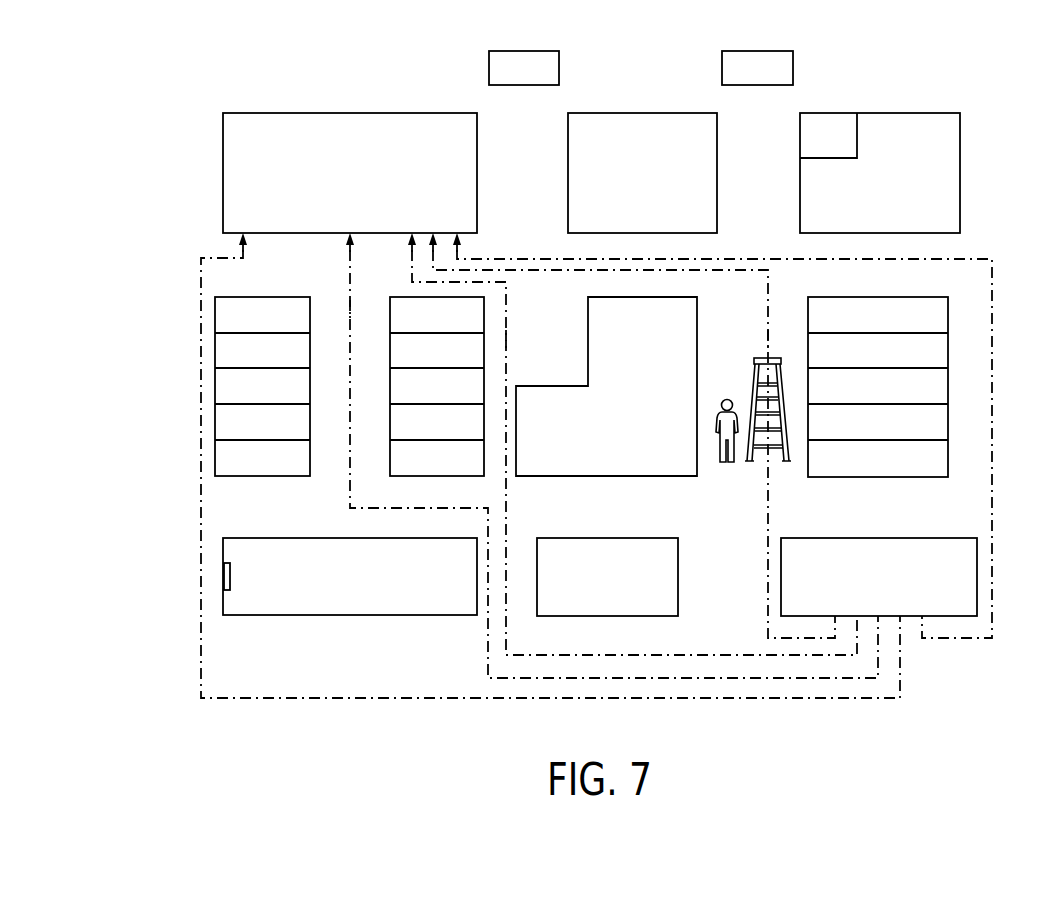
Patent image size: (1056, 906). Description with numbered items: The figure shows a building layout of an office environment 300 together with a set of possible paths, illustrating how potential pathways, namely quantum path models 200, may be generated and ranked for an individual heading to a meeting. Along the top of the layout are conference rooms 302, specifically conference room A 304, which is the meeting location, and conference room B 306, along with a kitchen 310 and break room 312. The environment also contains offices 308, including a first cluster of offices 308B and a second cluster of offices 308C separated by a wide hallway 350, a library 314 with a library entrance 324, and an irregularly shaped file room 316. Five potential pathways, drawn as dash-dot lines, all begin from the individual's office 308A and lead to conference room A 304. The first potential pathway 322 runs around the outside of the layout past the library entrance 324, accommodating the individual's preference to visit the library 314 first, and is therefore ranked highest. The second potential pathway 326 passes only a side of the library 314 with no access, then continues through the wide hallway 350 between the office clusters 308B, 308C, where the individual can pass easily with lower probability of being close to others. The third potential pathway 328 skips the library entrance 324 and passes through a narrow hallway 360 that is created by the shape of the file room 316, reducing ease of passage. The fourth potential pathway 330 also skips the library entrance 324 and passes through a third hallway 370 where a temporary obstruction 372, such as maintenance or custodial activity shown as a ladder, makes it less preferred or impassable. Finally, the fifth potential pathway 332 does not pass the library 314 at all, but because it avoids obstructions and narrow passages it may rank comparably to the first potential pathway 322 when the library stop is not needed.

The quantum path models 200 is at (928, 690).
The office environment 300 is at (918, 52).
The conference rooms 302 is at (290, 100).
The conference room A 304 is at (350, 112).
The conference room B 306 is at (645, 112).
The offices 308 is at (878, 297).
The individual's office 308A is at (878, 538).
The first cluster of offices 308B is at (235, 296).
The second cluster of offices 308C is at (437, 477).
The kitchen 310 is at (828, 113).
The break room 312 is at (960, 172).
The library 314 is at (357, 538).
The file room 316 is at (683, 296).
The first potential pathway 322 is at (738, 700).
The library entrance 324 is at (230, 578).
The second potential pathway 326 is at (730, 655).
The third potential pathway 328 is at (785, 679).
The fourth potential pathway 330 is at (767, 530).
The fifth potential pathway 332 is at (955, 638).
The wide hallway 350 is at (325, 271).
The narrow hallway 360 is at (521, 311).
The third hallway 370 is at (780, 304).
The temporary obstruction 372 is at (758, 390).